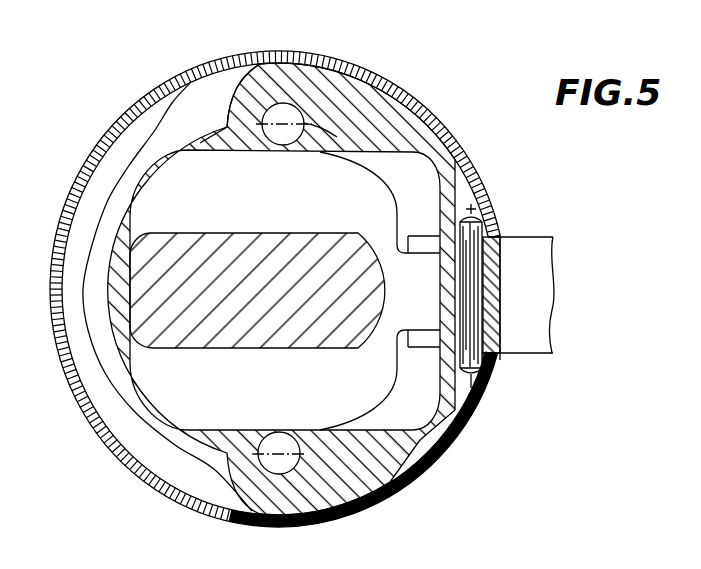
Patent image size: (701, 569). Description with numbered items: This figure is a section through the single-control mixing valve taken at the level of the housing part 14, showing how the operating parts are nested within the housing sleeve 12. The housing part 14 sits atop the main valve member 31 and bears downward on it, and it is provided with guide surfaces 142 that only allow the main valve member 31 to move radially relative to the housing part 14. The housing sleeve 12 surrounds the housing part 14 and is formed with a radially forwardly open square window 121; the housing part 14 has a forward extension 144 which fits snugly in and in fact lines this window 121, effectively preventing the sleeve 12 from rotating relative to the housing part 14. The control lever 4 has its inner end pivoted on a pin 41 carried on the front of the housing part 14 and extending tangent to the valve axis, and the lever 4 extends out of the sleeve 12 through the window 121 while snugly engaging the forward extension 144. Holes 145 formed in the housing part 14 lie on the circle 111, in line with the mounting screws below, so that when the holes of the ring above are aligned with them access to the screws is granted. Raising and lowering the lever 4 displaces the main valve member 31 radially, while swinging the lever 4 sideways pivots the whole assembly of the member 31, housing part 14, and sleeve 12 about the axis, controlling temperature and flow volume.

The control lever 4 is at (543, 268).
The housing sleeve 12 is at (466, 157).
The housing part 14 is at (432, 120).
The main valve member 31 is at (292, 243).
The pin 41 is at (492, 381).
The circle 111 is at (226, 122).
The window 121 is at (490, 208).
The guide surfaces 142 is at (441, 461).
The forward extension 144 is at (488, 369).
The holes 145 is at (290, 113).